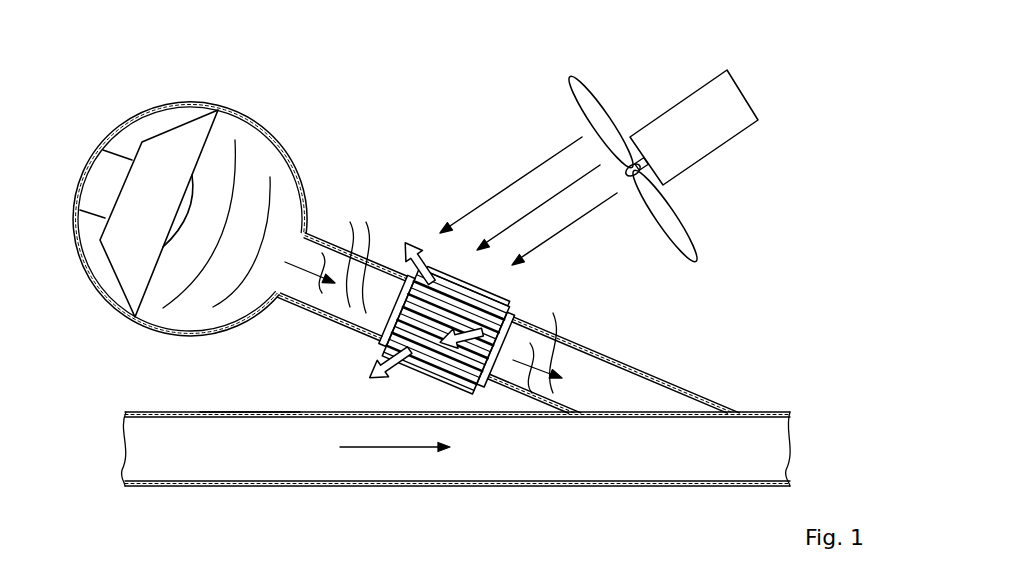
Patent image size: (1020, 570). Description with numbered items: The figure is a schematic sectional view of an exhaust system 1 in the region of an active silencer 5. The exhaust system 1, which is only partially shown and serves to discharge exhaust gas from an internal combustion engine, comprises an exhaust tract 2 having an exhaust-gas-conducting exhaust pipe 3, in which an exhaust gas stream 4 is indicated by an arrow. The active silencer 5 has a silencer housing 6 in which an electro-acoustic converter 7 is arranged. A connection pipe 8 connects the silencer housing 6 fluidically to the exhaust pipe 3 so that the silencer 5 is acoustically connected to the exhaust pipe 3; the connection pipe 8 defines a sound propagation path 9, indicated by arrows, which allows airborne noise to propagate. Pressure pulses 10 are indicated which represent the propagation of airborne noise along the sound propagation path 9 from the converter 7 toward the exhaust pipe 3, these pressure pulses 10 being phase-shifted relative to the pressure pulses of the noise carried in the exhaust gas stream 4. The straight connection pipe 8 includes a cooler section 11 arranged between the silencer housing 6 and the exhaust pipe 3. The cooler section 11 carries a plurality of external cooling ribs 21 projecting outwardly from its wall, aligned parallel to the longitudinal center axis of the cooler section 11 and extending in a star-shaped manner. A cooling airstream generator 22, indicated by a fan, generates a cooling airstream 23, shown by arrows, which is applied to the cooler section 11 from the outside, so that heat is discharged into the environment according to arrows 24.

The exhaust system 1 is at (798, 158).
The exhaust tract 2 is at (170, 410).
The exhaust pipe 3 is at (243, 412).
The exhaust gas stream 4 is at (385, 450).
The active silencer 5 is at (205, 102).
The silencer housing 6 is at (248, 117).
The electro-acoustic converter 7 is at (165, 143).
The connection pipe 8 is at (630, 362).
The sound propagation path 9 is at (297, 272).
The pressure pulses 10 is at (237, 170).
The cooler section 11 is at (437, 253).
The external cooling ribs 21 is at (500, 292).
The cooling airstream generator 22 is at (690, 105).
The cooling airstream 23 is at (627, 227).
The arrows indicating heat discharge 24 is at (430, 285).